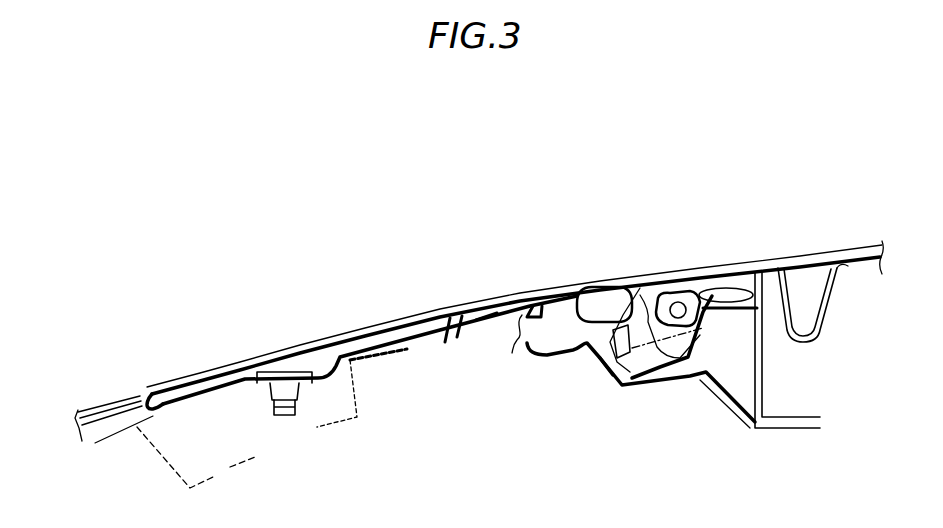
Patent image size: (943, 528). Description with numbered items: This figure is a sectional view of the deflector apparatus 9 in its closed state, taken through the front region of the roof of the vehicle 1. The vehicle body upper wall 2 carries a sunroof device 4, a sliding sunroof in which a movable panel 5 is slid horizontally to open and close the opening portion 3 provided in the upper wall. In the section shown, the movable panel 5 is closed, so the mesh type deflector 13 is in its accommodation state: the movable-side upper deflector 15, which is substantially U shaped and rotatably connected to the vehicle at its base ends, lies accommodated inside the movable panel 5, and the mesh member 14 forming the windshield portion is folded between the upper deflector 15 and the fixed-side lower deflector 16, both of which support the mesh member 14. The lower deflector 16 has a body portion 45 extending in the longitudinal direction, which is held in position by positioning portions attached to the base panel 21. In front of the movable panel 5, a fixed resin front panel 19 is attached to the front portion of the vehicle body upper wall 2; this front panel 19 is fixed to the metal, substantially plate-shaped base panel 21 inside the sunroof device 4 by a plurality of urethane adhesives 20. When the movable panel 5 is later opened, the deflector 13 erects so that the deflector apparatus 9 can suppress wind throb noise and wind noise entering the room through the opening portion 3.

The vehicle 1 is at (182, 236).
The vehicle body upper wall 2 is at (118, 405).
The opening portion 3 is at (620, 281).
The sunroof device 4 is at (568, 240).
The movable panel 5 is at (703, 265).
The deflector apparatus 9 is at (655, 290).
The deflector 13 is at (708, 371).
The mesh member 14 is at (645, 343).
The upper deflector 15 is at (705, 330).
The lower deflector 16 is at (621, 389).
The front panel 19 is at (218, 370).
The adhesive 20 is at (185, 382).
The base panel 21 is at (510, 346).
The body portion 45 is at (603, 351).